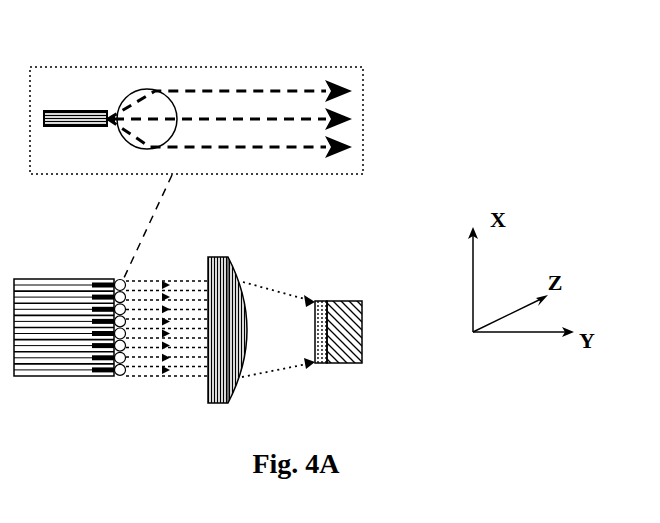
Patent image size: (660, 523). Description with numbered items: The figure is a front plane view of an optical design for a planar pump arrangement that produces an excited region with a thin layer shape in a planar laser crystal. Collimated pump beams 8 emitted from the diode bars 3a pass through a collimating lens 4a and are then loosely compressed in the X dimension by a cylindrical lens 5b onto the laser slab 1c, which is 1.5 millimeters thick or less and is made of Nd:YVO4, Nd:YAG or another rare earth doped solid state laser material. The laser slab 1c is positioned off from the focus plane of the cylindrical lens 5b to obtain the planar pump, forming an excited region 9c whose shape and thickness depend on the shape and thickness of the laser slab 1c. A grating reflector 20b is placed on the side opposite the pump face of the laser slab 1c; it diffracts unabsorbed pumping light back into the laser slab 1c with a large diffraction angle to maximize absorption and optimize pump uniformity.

The diode bars 3a is at (73, 115).
The collimating lens 4a is at (158, 105).
The collimated pump beams 8 is at (289, 119).
The cylindrical lens 5b is at (215, 297).
The excited region 9c is at (313, 323).
The laser slab 1c is at (320, 301).
The grating reflector 20b is at (345, 301).